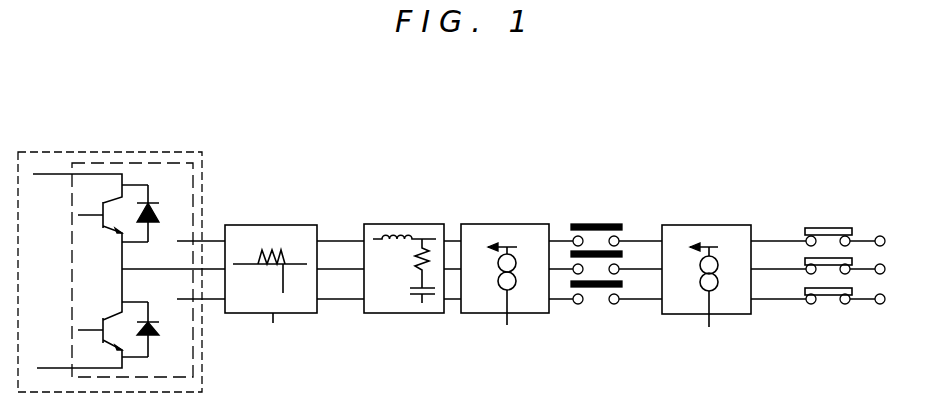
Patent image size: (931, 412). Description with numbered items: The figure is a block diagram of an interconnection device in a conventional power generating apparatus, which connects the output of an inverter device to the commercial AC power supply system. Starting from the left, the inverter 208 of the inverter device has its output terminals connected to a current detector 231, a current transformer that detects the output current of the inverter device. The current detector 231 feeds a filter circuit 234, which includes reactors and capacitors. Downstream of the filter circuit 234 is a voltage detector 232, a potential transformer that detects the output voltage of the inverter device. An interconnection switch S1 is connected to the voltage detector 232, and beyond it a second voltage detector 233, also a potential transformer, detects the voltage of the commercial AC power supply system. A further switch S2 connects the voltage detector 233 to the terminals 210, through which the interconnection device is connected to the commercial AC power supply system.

The inverter 208 is at (170, 163).
The current detector (current transformer; CT) 231 is at (277, 225).
The filter circuit 234 is at (402, 224).
The voltage detector (potential transformer; PT) 232 is at (502, 224).
The interconnection switch S1 is at (593, 224).
The voltage detector (potential transformer; PT) 233 is at (707, 225).
The switch S2 is at (829, 228).
The terminals 210 is at (880, 235).